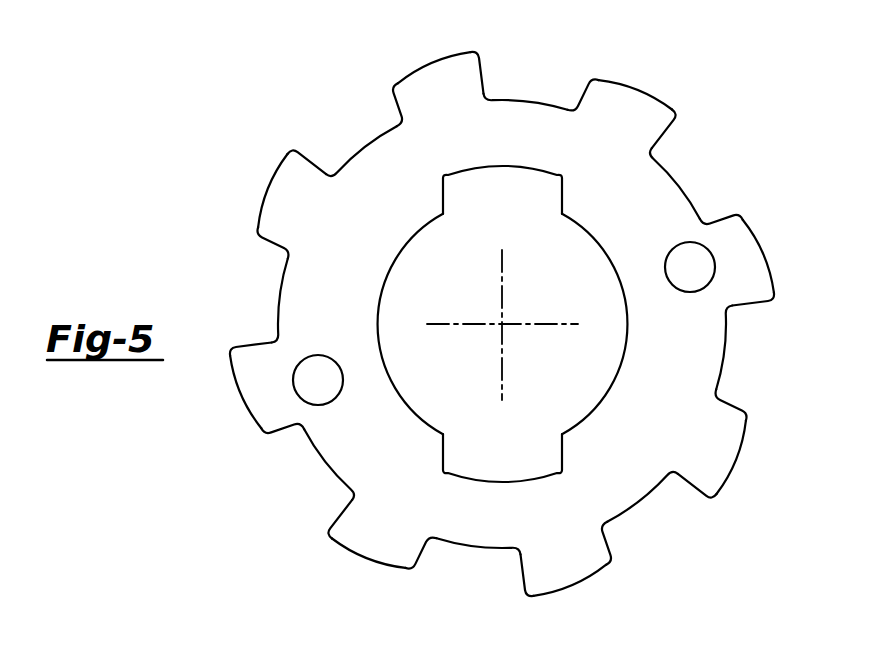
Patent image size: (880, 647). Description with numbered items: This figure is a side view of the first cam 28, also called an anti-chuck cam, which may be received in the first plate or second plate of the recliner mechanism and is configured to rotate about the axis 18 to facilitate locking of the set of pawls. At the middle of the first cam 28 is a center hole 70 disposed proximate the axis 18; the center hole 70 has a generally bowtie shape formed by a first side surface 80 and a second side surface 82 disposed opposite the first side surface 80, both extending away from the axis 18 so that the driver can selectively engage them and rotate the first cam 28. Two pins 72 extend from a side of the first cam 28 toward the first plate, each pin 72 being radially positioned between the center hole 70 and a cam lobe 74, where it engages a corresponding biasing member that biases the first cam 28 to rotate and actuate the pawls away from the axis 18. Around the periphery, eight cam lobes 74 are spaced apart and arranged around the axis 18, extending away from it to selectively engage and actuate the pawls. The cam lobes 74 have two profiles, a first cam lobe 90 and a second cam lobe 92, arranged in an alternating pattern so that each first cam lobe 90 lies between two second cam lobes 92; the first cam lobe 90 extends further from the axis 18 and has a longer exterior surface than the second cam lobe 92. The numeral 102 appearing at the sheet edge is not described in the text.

The axis 18 is at (503, 323).
The first cam 28 is at (362, 149).
The center hole 70 is at (452, 269).
The pins 72 is at (318, 355).
The cam lobes 74 is at (438, 60).
The first side surface 80 is at (443, 195).
The second side surface 82 is at (562, 195).
The first cam lobe 90 is at (427, 96).
The second cam lobe 92 is at (620, 122).
The reference 102 is at (225, 639).